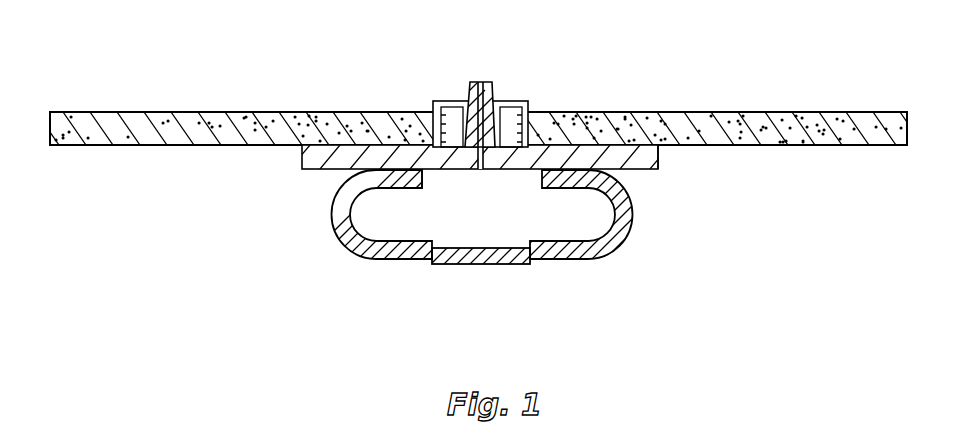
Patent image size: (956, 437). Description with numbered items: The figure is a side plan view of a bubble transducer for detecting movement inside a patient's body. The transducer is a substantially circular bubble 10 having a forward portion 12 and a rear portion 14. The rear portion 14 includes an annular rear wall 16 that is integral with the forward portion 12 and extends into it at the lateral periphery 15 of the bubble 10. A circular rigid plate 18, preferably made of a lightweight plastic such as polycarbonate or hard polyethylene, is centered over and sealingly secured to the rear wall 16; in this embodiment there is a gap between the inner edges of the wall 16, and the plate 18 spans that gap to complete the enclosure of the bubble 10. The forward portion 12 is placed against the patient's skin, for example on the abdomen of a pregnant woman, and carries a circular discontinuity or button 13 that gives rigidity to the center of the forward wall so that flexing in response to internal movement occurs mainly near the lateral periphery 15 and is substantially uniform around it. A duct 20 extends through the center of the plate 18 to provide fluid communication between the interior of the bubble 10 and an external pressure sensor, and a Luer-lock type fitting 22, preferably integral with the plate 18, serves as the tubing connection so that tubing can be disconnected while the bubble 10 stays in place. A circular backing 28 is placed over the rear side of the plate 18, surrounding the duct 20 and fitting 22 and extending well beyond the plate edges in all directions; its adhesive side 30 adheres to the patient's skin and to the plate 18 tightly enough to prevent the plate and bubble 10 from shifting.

The bubble 10 is at (495, 180).
The forward portion 12 is at (490, 256).
The button 13 is at (487, 264).
The rear portion 14 is at (302, 170).
The lateral periphery 15 is at (334, 228).
The annular rear wall 16 is at (407, 188).
The rigid plate 18 is at (658, 158).
The duct 20 is at (480, 82).
The Luer-lock type fitting 22 is at (503, 115).
The circular backing 28 is at (727, 115).
The adhesive side 30 is at (825, 148).